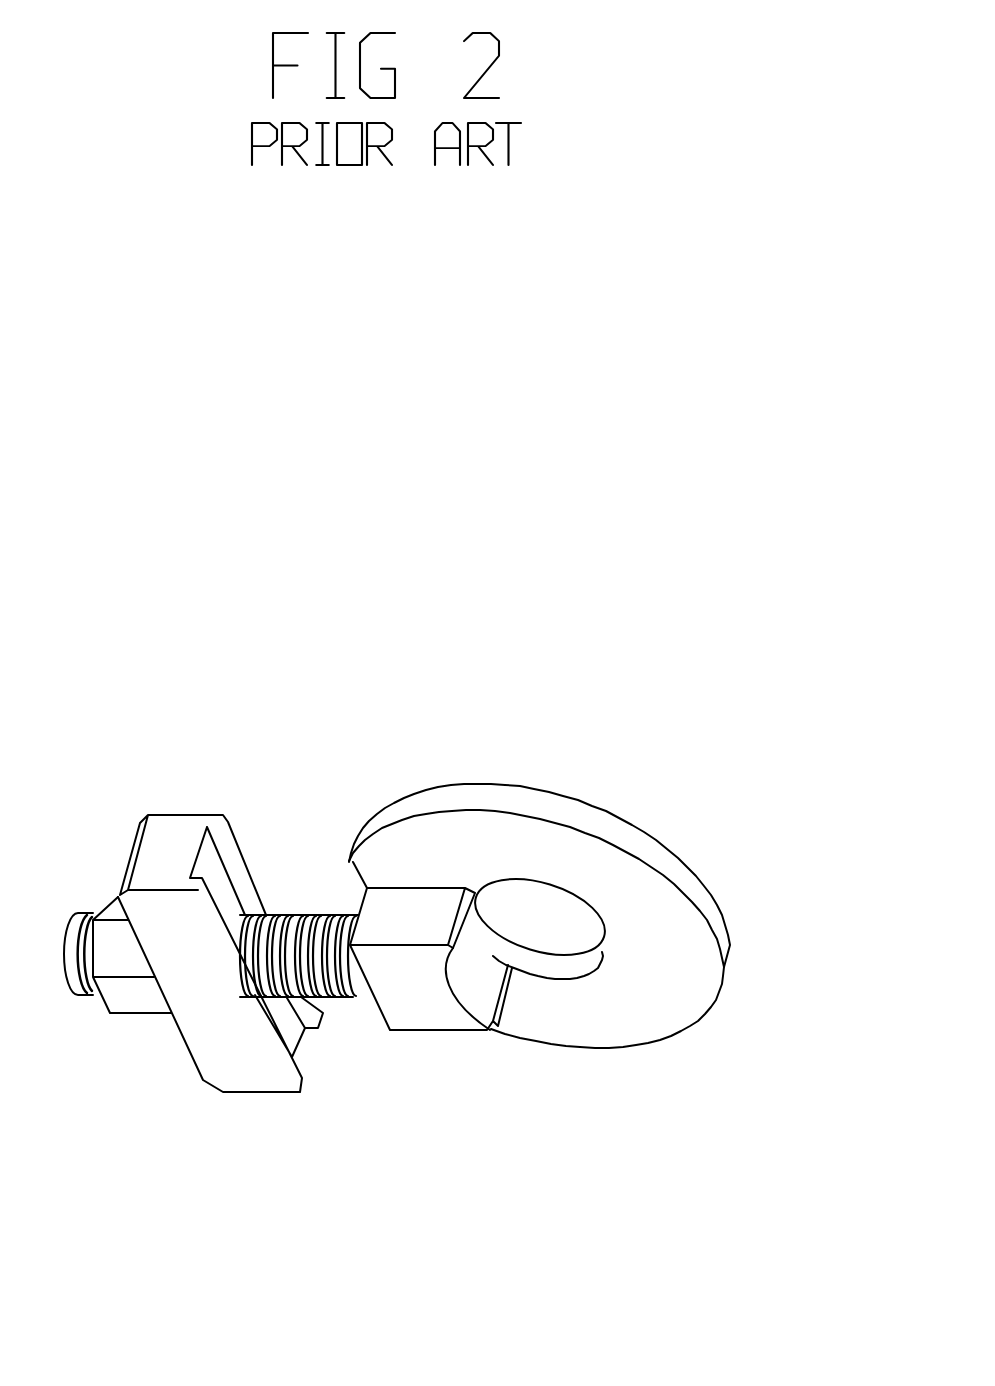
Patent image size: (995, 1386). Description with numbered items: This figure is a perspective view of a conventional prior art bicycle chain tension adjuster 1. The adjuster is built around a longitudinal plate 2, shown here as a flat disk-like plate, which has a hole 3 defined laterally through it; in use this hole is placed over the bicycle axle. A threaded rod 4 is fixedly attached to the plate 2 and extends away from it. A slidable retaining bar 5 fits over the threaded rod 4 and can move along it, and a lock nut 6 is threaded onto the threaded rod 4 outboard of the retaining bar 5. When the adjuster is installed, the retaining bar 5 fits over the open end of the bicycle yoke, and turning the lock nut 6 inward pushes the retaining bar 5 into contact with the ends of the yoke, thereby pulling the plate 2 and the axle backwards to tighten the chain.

The bicycle chain tension adjuster 1 is at (308, 410).
The longitudinal plate 2 is at (614, 916).
The hole 3 is at (581, 817).
The threaded rod 4 is at (288, 821).
The slidable retaining bar 5 is at (220, 1072).
The lock nut 6 is at (110, 1107).